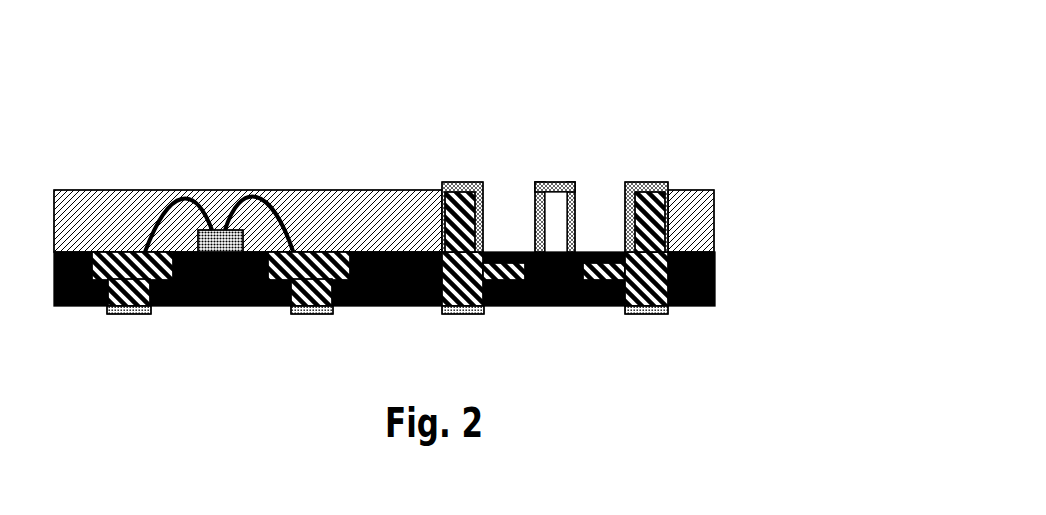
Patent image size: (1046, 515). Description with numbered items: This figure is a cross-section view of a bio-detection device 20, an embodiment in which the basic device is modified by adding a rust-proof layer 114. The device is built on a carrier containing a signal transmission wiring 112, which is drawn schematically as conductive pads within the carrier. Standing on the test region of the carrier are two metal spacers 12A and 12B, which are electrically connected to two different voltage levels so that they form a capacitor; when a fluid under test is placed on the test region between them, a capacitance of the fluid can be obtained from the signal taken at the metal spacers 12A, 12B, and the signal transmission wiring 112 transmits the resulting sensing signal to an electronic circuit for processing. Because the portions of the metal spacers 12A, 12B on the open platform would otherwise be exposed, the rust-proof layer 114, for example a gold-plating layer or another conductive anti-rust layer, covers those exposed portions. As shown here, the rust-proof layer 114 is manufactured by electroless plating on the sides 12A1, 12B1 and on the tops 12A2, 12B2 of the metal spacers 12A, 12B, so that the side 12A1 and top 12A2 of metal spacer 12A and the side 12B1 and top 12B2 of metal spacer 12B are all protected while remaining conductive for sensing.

The bio-detection device 20 is at (78, 135).
The signal transmission wiring 112 is at (320, 297).
The rust-proof layer 114 is at (636, 188).
The metal spacer 12B is at (417, 134).
The side of metal spacer 12B1 is at (478, 195).
The top of metal spacer 12B2 is at (462, 192).
The metal spacer 12A is at (598, 126).
The side of metal spacer 12A1 is at (541, 221).
The top of metal spacer 12A2 is at (556, 183).